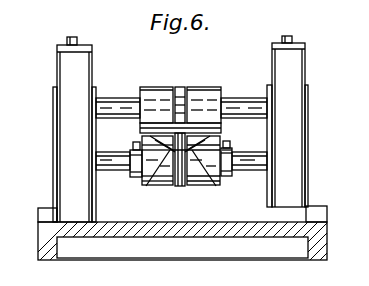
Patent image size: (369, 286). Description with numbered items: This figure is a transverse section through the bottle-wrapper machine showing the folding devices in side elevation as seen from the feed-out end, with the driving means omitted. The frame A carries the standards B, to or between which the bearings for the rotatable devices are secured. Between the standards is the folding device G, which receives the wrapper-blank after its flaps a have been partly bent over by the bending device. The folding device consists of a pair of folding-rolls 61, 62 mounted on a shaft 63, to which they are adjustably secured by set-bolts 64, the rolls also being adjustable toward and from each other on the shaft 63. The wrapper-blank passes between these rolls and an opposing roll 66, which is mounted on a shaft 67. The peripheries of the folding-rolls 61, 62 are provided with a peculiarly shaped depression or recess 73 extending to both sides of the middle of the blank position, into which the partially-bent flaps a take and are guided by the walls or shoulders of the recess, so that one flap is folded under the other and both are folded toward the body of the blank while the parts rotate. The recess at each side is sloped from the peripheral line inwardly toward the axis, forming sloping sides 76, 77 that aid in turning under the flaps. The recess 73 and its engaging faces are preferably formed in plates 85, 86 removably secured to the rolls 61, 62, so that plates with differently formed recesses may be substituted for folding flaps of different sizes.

The frame A is at (194, 238).
The standards B is at (180, 129).
The folding device G is at (223, 72).
The opposing roll 66 is at (152, 87).
The shaft 67 is at (238, 100).
The shaft 63 is at (134, 178).
The set-bolts 64 is at (133, 144).
The flaps a is at (233, 135).
The plate 85 is at (152, 185).
The sloping side 76 is at (140, 183).
The folding-roll 62 is at (218, 183).
The sloping side 77 is at (224, 177).
The folding-roll 61 is at (173, 187).
The recess 73 is at (193, 183).
The plate 86 is at (232, 172).